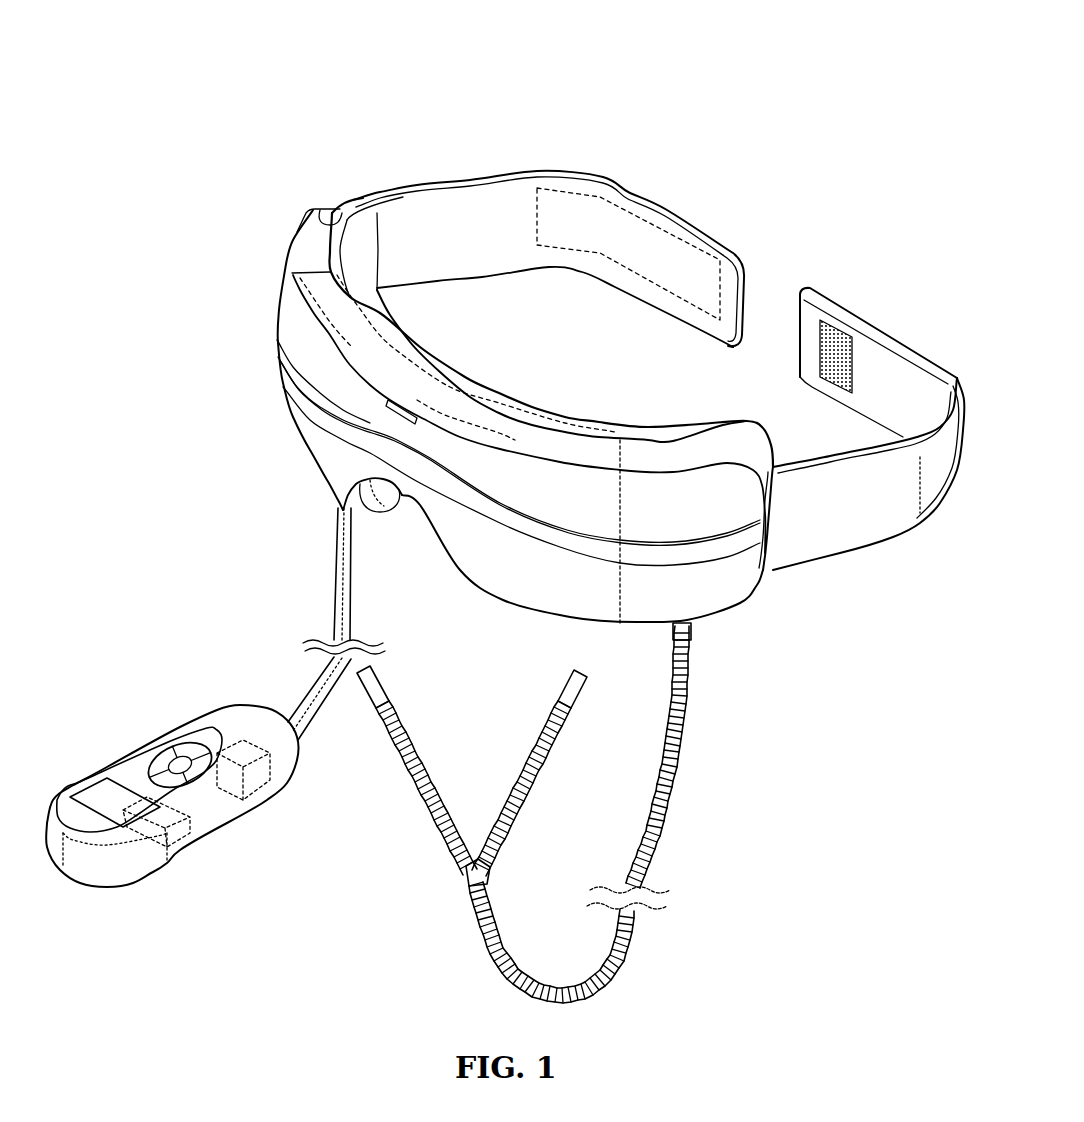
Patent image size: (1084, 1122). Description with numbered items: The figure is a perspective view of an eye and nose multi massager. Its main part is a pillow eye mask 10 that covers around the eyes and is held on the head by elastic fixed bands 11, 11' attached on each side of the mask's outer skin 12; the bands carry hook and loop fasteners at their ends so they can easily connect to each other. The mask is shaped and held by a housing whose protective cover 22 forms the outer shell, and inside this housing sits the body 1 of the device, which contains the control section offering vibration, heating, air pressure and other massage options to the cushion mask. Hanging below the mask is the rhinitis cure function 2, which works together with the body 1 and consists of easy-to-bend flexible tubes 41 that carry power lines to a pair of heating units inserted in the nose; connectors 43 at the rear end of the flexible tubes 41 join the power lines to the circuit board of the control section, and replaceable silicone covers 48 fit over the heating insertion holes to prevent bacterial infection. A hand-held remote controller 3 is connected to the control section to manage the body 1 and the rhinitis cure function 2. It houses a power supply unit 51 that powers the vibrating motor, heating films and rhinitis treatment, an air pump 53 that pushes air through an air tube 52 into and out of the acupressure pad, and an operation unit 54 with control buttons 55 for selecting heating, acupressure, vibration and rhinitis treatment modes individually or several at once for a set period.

The body 1 is at (241, 120).
The rhinitis cure function 2 is at (714, 893).
The remote controller 3 is at (156, 690).
The pillow eye mask 10 is at (372, 218).
The fixed band 11 is at (868, 457).
The fixed band 11' is at (548, 230).
The outer skin 12 is at (323, 220).
The protective cover 22 is at (288, 337).
The flexible tubes 41 is at (683, 743).
The connectors 43 is at (707, 627).
The replaceable silicone covers 48 is at (563, 680).
The power supply unit 51 is at (247, 787).
The air tube 52 is at (335, 552).
The air pump 53 is at (163, 853).
The operation unit 54 is at (110, 763).
The control buttons 55 is at (197, 745).